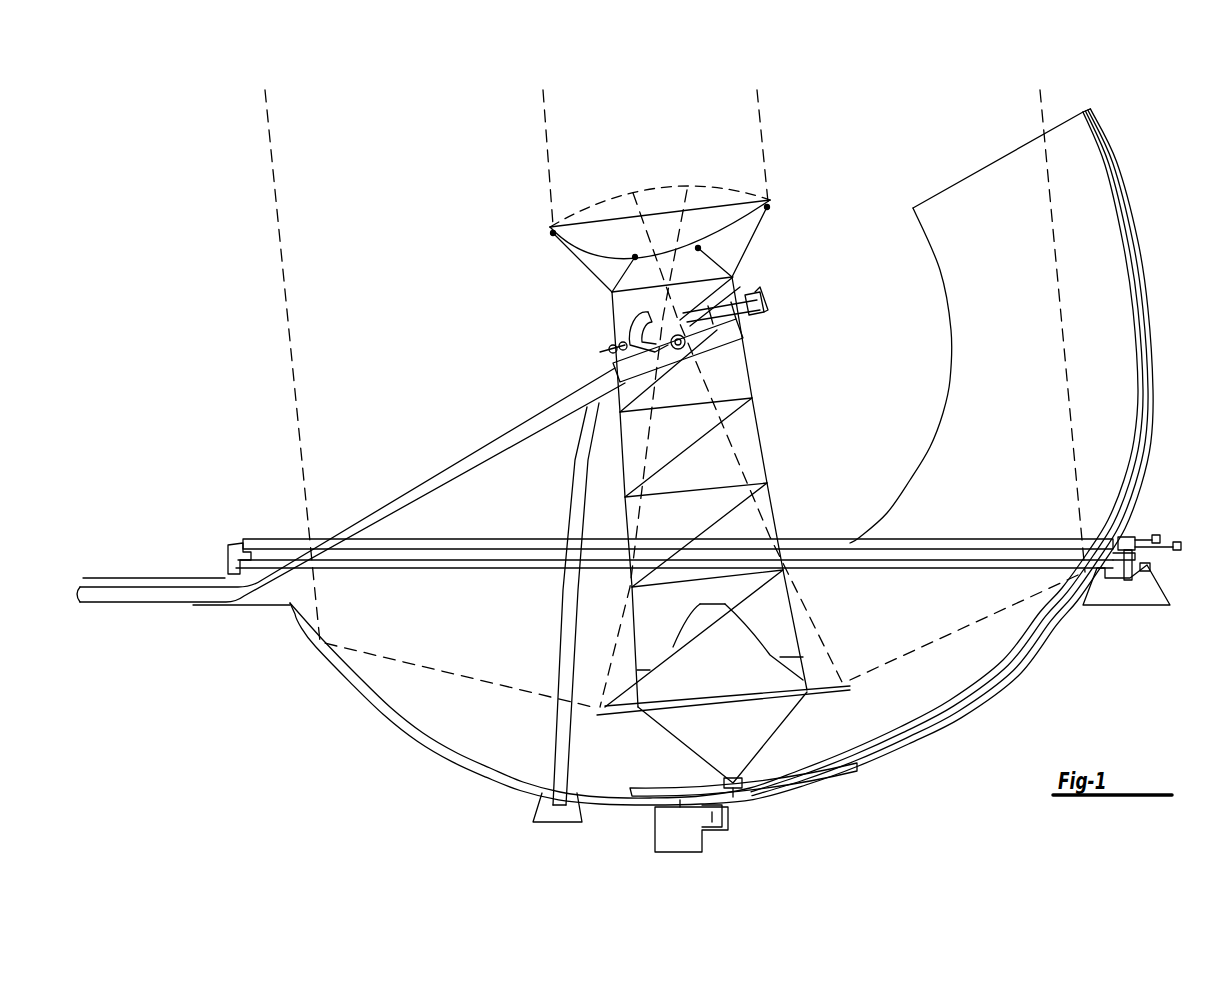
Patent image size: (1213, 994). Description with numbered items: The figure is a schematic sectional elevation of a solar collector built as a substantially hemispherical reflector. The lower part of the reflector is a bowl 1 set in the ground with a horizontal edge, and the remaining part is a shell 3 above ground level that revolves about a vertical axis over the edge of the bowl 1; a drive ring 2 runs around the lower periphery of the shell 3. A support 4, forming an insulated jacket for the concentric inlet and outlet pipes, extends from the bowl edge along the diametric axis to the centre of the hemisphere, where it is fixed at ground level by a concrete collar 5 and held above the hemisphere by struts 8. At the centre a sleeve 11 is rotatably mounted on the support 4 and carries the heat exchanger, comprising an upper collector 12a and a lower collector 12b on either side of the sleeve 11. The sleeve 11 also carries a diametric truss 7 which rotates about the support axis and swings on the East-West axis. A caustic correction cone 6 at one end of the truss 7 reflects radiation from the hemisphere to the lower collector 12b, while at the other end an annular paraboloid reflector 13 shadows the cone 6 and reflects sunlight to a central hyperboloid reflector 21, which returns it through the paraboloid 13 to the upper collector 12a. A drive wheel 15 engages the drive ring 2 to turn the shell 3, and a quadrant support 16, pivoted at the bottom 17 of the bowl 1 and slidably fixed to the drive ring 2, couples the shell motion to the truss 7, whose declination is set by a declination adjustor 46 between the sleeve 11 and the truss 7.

The bowl 1 is at (908, 755).
The drive ring 2 is at (1130, 572).
The shell 3 is at (1150, 268).
The support 4 is at (452, 463).
The concrete collar 5 is at (210, 578).
The caustic correction cone 6 is at (732, 665).
The diametric truss 7 is at (768, 455).
The struts 8 is at (560, 623).
The sleeve 11 is at (745, 335).
The upper collector 12a is at (735, 276).
The lower collector 12b is at (697, 357).
The annular paraboloid reflector 13 is at (592, 250).
The drive wheel 15 is at (1178, 551).
The quadrant support 16 is at (1140, 306).
The bottom of the bowl 17 is at (656, 812).
The hyperboloid reflector 21 is at (658, 190).
The declination adjustor 46 is at (635, 336).